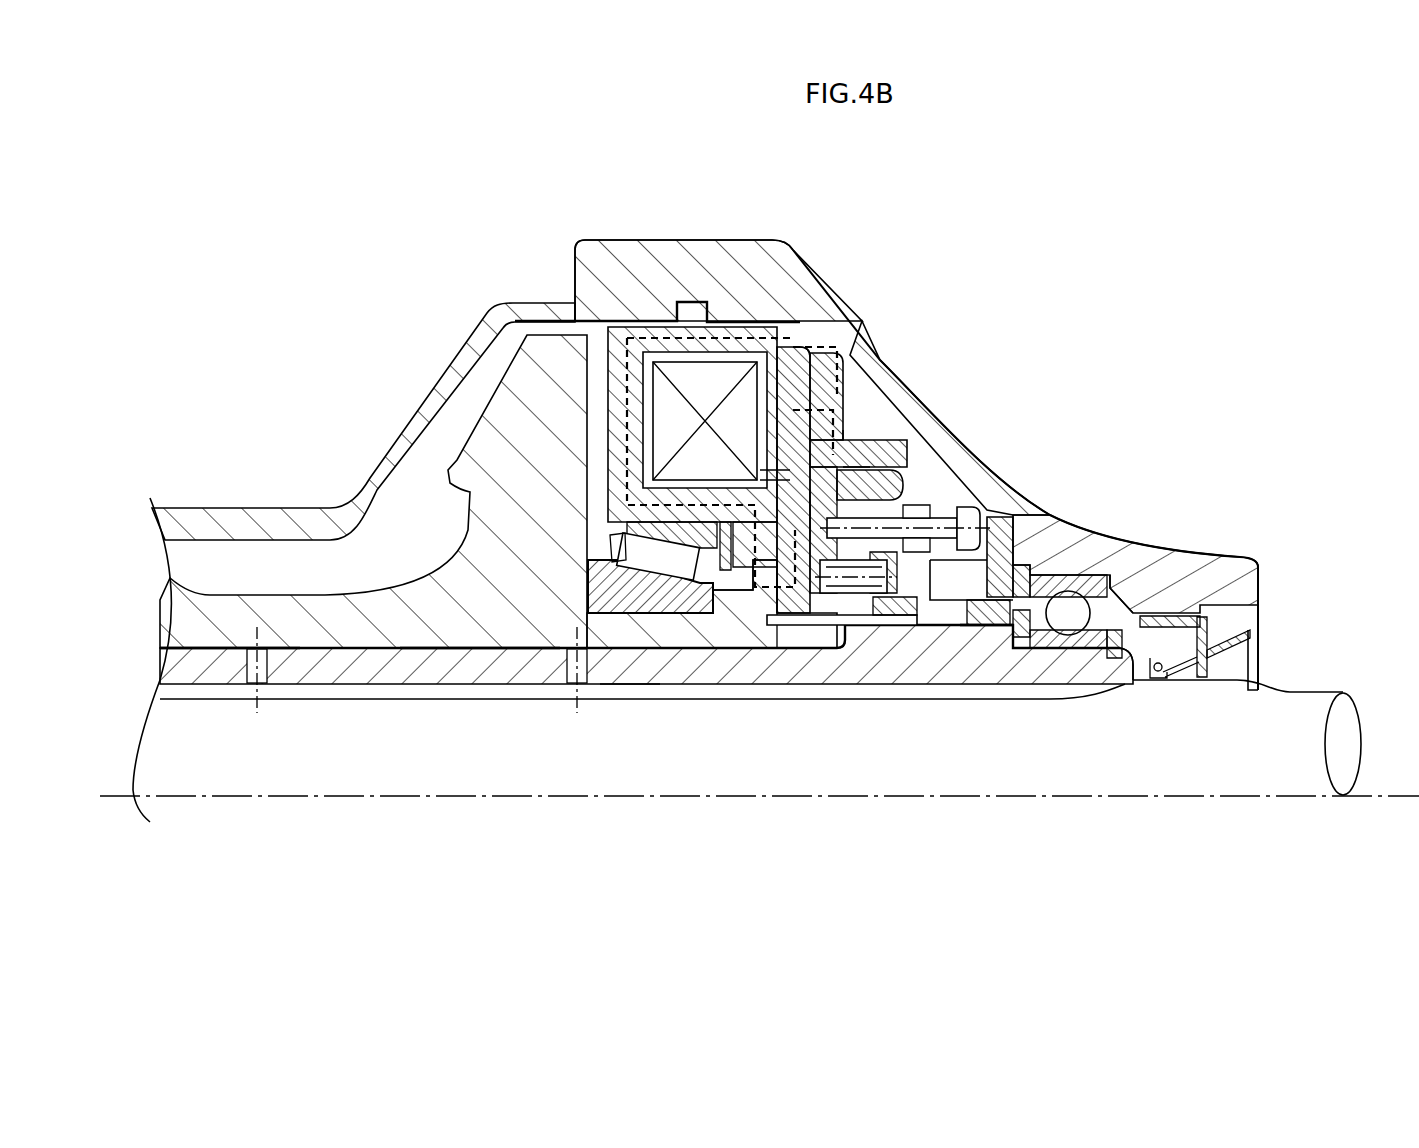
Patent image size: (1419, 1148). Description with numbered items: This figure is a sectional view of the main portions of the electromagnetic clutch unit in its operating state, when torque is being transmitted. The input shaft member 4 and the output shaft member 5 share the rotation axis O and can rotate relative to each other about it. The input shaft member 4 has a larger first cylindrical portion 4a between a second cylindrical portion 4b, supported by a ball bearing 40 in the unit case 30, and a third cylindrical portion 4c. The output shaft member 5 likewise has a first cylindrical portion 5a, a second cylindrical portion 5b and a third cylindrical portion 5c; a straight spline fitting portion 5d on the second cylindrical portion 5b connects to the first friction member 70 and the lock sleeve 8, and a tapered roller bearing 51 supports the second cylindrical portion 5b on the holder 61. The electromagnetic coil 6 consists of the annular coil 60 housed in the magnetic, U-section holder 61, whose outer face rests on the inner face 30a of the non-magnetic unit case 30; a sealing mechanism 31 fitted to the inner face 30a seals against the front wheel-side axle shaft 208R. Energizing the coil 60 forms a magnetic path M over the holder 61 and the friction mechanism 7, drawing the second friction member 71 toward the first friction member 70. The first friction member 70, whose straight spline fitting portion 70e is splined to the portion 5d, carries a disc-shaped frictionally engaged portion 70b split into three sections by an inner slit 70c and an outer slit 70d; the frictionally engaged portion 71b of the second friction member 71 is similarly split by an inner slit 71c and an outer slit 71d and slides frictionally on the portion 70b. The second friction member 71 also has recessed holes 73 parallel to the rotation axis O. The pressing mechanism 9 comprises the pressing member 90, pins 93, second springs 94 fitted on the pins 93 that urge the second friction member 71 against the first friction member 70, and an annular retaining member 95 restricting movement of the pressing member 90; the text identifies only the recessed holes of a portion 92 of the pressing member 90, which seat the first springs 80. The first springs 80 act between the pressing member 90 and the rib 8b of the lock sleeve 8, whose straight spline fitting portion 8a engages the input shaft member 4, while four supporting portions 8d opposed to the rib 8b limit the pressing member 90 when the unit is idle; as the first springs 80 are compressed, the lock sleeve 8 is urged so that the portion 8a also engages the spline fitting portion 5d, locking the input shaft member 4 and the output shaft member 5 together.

The input shaft member 4 is at (1057, 690).
The first cylindrical portion 4a is at (985, 675).
The second cylindrical portion 4b is at (1112, 665).
The third cylindrical portion 4c is at (628, 675).
The output shaft member 5 is at (330, 592).
The first cylindrical portion 5a is at (490, 632).
The second cylindrical portion 5b is at (715, 625).
The third cylindrical portion 5c is at (213, 635).
The straight spline fitting portion 5d is at (805, 642).
The tapered roller bearing 51 is at (624, 356).
The electromagnetic coil 6 is at (702, 349).
The coil 60 is at (742, 370).
The holder 61 is at (722, 358).
The magnetic path M is at (669, 347).
The friction mechanism 7 is at (879, 429).
The first friction member 70 is at (850, 361).
The frictionally engaged portion 70b is at (815, 347).
The inner slit 70c is at (830, 500).
The outer slit 70d is at (838, 400).
The straight spline fitting portion 70e is at (784, 565).
The second friction member 71 is at (836, 363).
The frictionally engaged portion 71b is at (840, 437).
The inner slit 71c is at (845, 522).
The outer slit 71d is at (840, 467).
The recessed holes 73 is at (782, 500).
The pressing mechanism 9 is at (990, 486).
The pressing member 90 is at (842, 487).
The roller 92 is at (900, 567).
The pins 93 is at (855, 557).
The second springs 94 is at (900, 522).
The annular retaining member 95 is at (885, 543).
The lock sleeve 8 is at (858, 614).
The straight spline fitting portion 8a is at (900, 614).
The rib 8b is at (812, 626).
The supporting portions 8d is at (1032, 566).
The first springs 80 is at (868, 613).
The unit case 30 is at (1243, 562).
The inner face 30a is at (1100, 578).
The sealing mechanism 31 is at (1230, 642).
The ball bearing 40 is at (1192, 612).
The front wheel-side axle shaft 208R is at (1298, 702).
The rotation axis O is at (1382, 797).